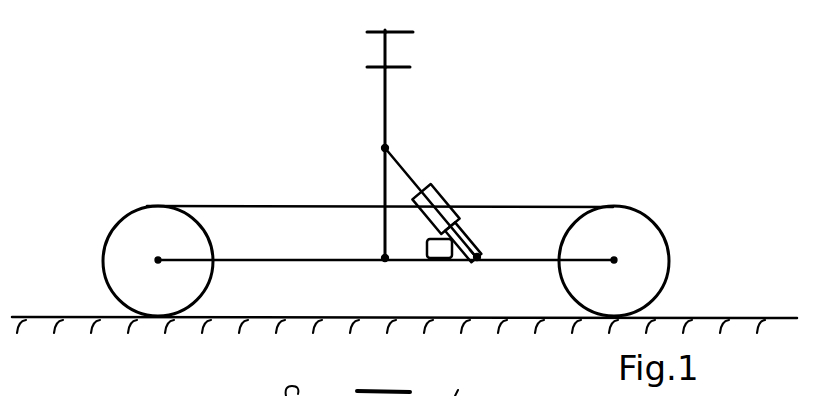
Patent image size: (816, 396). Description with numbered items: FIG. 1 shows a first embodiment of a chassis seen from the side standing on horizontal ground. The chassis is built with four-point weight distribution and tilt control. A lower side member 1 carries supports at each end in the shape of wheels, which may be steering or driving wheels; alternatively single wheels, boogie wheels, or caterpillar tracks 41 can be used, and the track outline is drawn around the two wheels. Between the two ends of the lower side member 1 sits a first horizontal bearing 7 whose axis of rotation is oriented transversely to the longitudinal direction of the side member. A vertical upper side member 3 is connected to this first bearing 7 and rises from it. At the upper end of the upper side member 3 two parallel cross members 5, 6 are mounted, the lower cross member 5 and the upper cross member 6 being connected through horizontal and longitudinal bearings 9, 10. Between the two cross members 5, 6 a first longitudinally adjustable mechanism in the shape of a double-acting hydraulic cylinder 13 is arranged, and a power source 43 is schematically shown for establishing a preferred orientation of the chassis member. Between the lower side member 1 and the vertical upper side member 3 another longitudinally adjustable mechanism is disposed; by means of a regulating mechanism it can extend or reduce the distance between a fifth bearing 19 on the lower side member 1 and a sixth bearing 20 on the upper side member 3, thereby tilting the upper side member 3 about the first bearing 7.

The lower side member 1 is at (297, 262).
The vertical upper side member 3 is at (385, 101).
The lower cross member 5 is at (390, 72).
The upper cross member 6 is at (392, 36).
The first horizontal bearing 7 is at (379, 254).
The horizontal and longitudinal bearing 9 is at (367, 33).
The horizontal and longitudinal bearing 10 is at (367, 66).
The double-acting hydraulic cylinder 13 is at (450, 199).
The fifth bearing 19 is at (478, 257).
The sixth bearing 20 is at (387, 147).
The caterpillar tracks 41 is at (578, 205).
The power source 43 is at (426, 238).